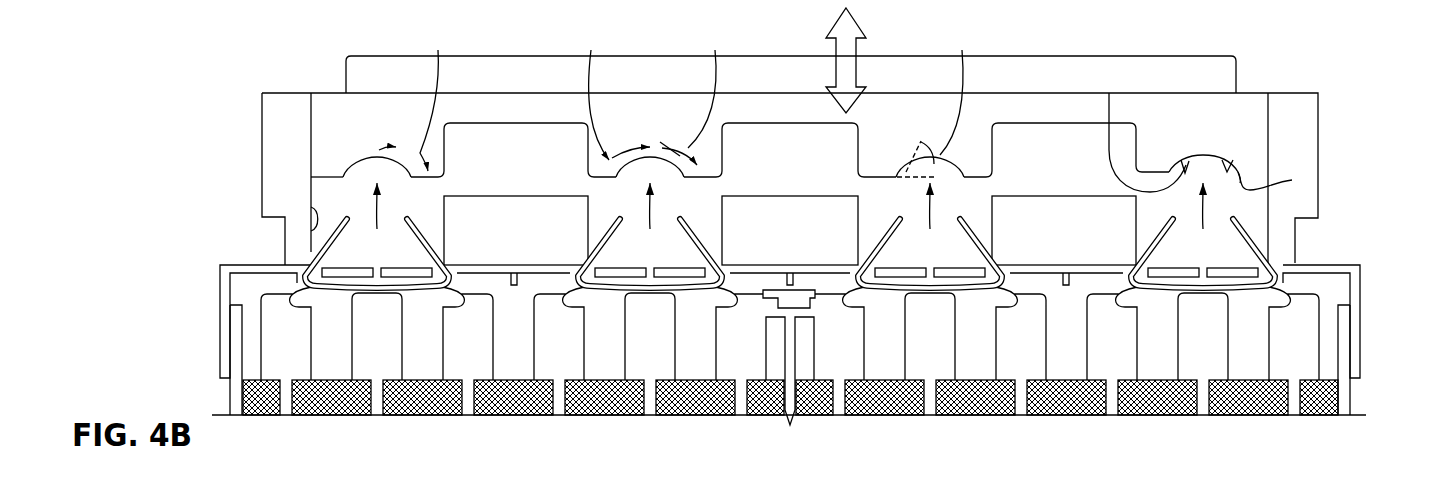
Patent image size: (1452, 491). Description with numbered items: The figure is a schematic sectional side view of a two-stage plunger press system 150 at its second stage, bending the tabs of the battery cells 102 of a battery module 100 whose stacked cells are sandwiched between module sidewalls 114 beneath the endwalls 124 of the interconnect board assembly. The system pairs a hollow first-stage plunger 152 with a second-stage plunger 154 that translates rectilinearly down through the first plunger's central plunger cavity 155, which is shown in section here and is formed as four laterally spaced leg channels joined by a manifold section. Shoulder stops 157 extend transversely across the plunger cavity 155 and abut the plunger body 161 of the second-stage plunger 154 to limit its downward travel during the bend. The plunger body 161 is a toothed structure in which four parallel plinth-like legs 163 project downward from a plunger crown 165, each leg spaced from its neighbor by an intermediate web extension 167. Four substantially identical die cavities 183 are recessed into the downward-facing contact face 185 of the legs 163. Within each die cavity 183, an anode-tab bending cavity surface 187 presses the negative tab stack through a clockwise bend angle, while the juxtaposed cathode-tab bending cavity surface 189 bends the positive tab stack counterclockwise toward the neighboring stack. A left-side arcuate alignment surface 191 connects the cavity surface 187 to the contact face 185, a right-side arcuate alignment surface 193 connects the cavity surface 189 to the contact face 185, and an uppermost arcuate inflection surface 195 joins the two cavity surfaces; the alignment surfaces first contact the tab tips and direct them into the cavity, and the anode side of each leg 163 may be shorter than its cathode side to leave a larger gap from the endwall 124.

The battery module 100 is at (200, 267).
The battery cells 102 is at (483, 8).
The module sidewalls 114 is at (230, 396).
The endwalls 124 is at (220, 311).
The two-stage plunger press system 150 is at (223, 35).
The first-stage plunger 152 is at (261, 134).
The second-stage plunger 154 is at (308, 120).
The plunger cavity 155 is at (312, 229).
The shoulder stops 157 is at (533, 196).
The plunger body 161 is at (310, 163).
The legs 163 is at (377, 146).
The plunger crown 165 is at (345, 63).
The web extension 167 is at (508, 108).
The die cavities 183 is at (790, 220).
The contact face 185 is at (983, 190).
The anode-tab bending cavity surface 187 is at (1182, 170).
The cathode-tab bending cavity surface 189 is at (1229, 174).
The left-side arcuate alignment surface 191 is at (1109, 93).
The right-side arcuate alignment surface 193 is at (1292, 180).
The arcuate inflection surface 195 is at (1226, 160).